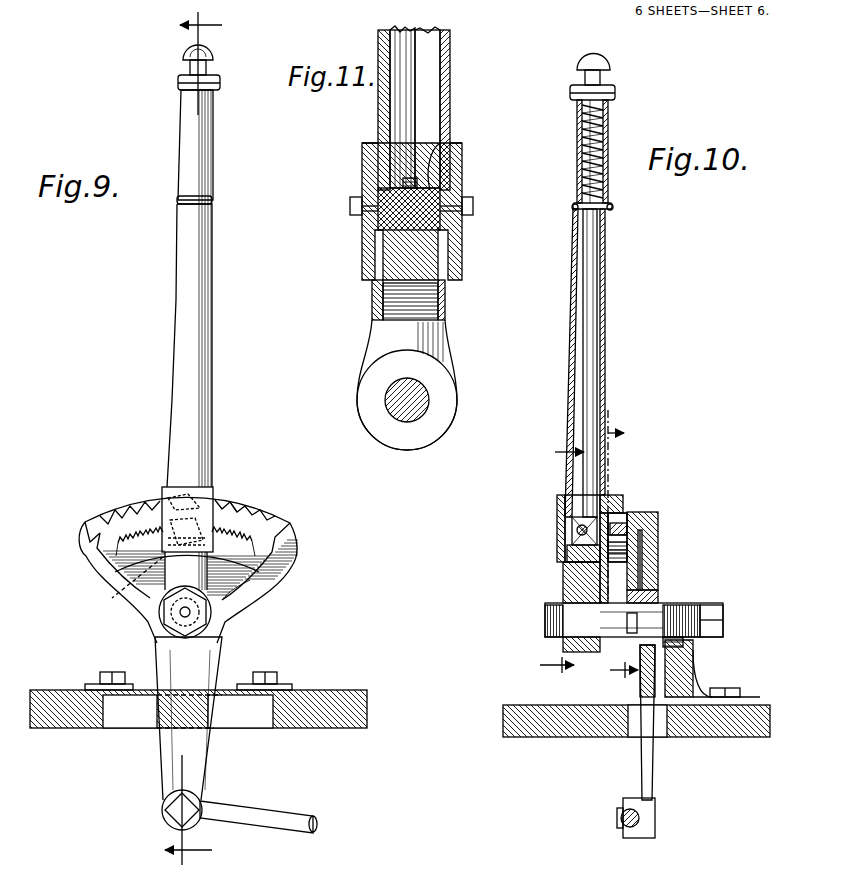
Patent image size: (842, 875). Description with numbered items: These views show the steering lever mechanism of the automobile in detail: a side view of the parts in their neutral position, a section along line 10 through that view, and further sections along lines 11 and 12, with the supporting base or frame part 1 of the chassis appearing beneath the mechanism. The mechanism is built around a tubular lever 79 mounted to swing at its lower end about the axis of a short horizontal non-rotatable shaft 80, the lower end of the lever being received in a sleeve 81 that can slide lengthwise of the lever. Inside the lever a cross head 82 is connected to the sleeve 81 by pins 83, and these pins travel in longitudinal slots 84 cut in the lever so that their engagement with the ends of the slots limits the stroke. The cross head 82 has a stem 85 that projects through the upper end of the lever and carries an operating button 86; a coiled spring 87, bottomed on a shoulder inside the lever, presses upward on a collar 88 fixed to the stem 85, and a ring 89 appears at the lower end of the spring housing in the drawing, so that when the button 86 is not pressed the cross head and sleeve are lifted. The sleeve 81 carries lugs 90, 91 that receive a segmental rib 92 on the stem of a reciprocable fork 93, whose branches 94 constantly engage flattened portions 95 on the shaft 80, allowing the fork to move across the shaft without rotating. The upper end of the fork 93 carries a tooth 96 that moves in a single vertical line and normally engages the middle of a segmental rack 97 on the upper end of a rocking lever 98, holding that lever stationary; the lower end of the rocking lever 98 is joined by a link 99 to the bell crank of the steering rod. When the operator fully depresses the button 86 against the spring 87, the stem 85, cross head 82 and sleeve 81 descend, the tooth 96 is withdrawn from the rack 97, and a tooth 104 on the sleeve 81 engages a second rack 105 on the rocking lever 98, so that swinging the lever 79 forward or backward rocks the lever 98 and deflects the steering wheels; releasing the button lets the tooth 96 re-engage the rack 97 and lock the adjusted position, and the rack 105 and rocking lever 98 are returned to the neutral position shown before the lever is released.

In FIG. 9, the base plate 1 is at (55, 702).
In FIG. 10, the base plate 1 is at (528, 712).
In FIG. 9, the section line 10— 10 is at (206, 438).
In FIG. 10, the section line 11— 11 is at (558, 568).
In FIG. 10, the section line 12— 12 is at (620, 553).
In FIG. 9, the tubular lever 79 is at (193, 238).
In FIG. 11, the tubular lever 79 is at (378, 112).
In FIG. 10, the tubular lever 79 is at (605, 282).
In FIG. 11, the non-rotatable shaft 80 is at (408, 410).
In FIG. 10, the non-rotatable shaft 80 is at (563, 605).
In FIG. 9, the sleeve 81 is at (213, 492).
In FIG. 11, the sleeve 81 is at (462, 262).
In FIG. 10, the sleeve 81 is at (557, 513).
In FIG. 11, the cross head 82 is at (440, 143).
In FIG. 10, the cross head 82 is at (572, 522).
In FIG. 9, the pins 83 is at (130, 508).
In FIG. 11, the pins 83 is at (462, 206).
In FIG. 10, the pins 83 is at (577, 533).
In FIG. 11, the slots 84 is at (460, 230).
In FIG. 10, the slots 84 is at (567, 556).
In FIG. 11, the stem 85 is at (413, 96).
In FIG. 10, the stem 85 is at (585, 339).
In FIG. 9, the operating button 86 is at (212, 48).
In FIG. 10, the operating button 86 is at (610, 62).
In FIG. 10, the coiled spring 87 is at (604, 131).
In FIG. 10, the collar 88 is at (615, 95).
In FIG. 10, the ring 89 is at (606, 212).
In FIG. 9, the lug 90 is at (112, 546).
In FIG. 10, the lug 90 is at (620, 513).
In FIG. 9, the lug 91 is at (112, 598).
In FIG. 10, the lug 91 is at (627, 562).
In FIG. 10, the segmental rib 92 is at (627, 547).
In FIG. 9, the reciprocable fork 93 is at (238, 598).
In FIG. 10, the reciprocable fork 93 is at (645, 583).
In FIG. 9, the branches 94 is at (168, 628).
In FIG. 10, the branches 94 is at (625, 643).
In FIG. 10, the flattened portions 95 is at (637, 620).
In FIG. 9, the tooth 96 is at (150, 500).
In FIG. 10, the tooth 96 is at (642, 530).
In FIG. 9, the segmental rack 97 is at (262, 580).
In FIG. 10, the segmental rack 97 is at (627, 513).
In FIG. 9, the rocking lever 98 is at (195, 745).
In FIG. 10, the rocking lever 98 is at (653, 775).
In FIG. 9, the link 99 is at (292, 815).
In FIG. 10, the link 99 is at (622, 825).
In FIG. 9, the tooth 104 is at (195, 498).
In FIG. 10, the tooth 104 is at (617, 495).
In FIG. 9, the rack 105 is at (235, 515).
In FIG. 10, the rack 105 is at (618, 513).